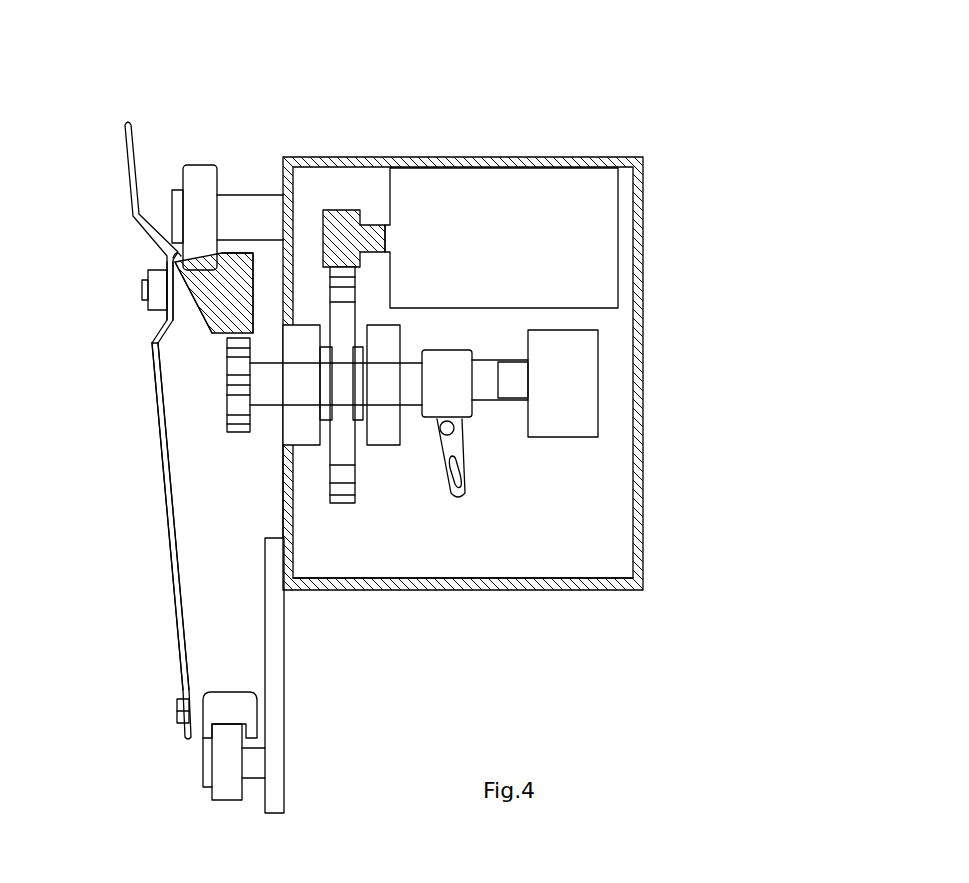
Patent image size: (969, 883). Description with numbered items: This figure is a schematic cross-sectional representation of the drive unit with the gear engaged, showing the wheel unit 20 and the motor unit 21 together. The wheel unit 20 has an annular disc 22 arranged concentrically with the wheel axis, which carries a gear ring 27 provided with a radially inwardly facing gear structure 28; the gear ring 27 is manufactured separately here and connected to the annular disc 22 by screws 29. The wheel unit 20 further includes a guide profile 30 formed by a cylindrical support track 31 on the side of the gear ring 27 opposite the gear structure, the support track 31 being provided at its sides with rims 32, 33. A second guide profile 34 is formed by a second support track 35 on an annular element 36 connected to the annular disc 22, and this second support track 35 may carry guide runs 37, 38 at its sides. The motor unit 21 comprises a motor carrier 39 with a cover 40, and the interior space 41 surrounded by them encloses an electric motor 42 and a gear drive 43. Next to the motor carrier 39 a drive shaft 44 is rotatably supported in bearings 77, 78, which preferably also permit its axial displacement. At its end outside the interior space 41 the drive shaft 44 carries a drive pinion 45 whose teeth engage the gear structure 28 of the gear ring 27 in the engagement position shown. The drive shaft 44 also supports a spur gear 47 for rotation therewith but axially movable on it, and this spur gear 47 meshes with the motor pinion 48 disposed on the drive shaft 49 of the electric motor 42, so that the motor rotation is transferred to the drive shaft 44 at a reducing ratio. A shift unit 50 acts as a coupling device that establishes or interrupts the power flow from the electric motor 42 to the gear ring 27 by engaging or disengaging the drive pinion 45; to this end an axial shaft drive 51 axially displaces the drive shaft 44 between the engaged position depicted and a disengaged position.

The wheel unit 20 is at (152, 112).
The motor unit 21 is at (458, 140).
The annular disc 22 is at (162, 457).
The gear ring 27 is at (212, 340).
The gear structure 28 is at (252, 334).
The screws 29 is at (145, 318).
The guide profile 30 is at (172, 368).
The support track 31 is at (215, 290).
The rim 32 is at (165, 262).
The rim 33 is at (236, 262).
The second guide profile 34 is at (213, 627).
The second support track 35 is at (222, 724).
The annular element 36 is at (238, 708).
The guide run 37 is at (192, 728).
The guide run 38 is at (262, 726).
The motor carrier 39 is at (290, 537).
The cover 40 is at (360, 592).
The interior space 41 is at (477, 547).
The electric motor 42 is at (530, 252).
The gear drive 43 is at (372, 465).
The drive shaft 44 is at (431, 393).
The drive pinion 45 is at (238, 442).
The spur gear 47 is at (341, 490).
The motor pinion 48 is at (308, 223).
The drive shaft of the electric motor 49 is at (382, 207).
The shift unit 50 is at (492, 438).
The axial shaft drive 51 is at (572, 455).
The bearing 77 is at (297, 325).
The bearing 78 is at (400, 335).